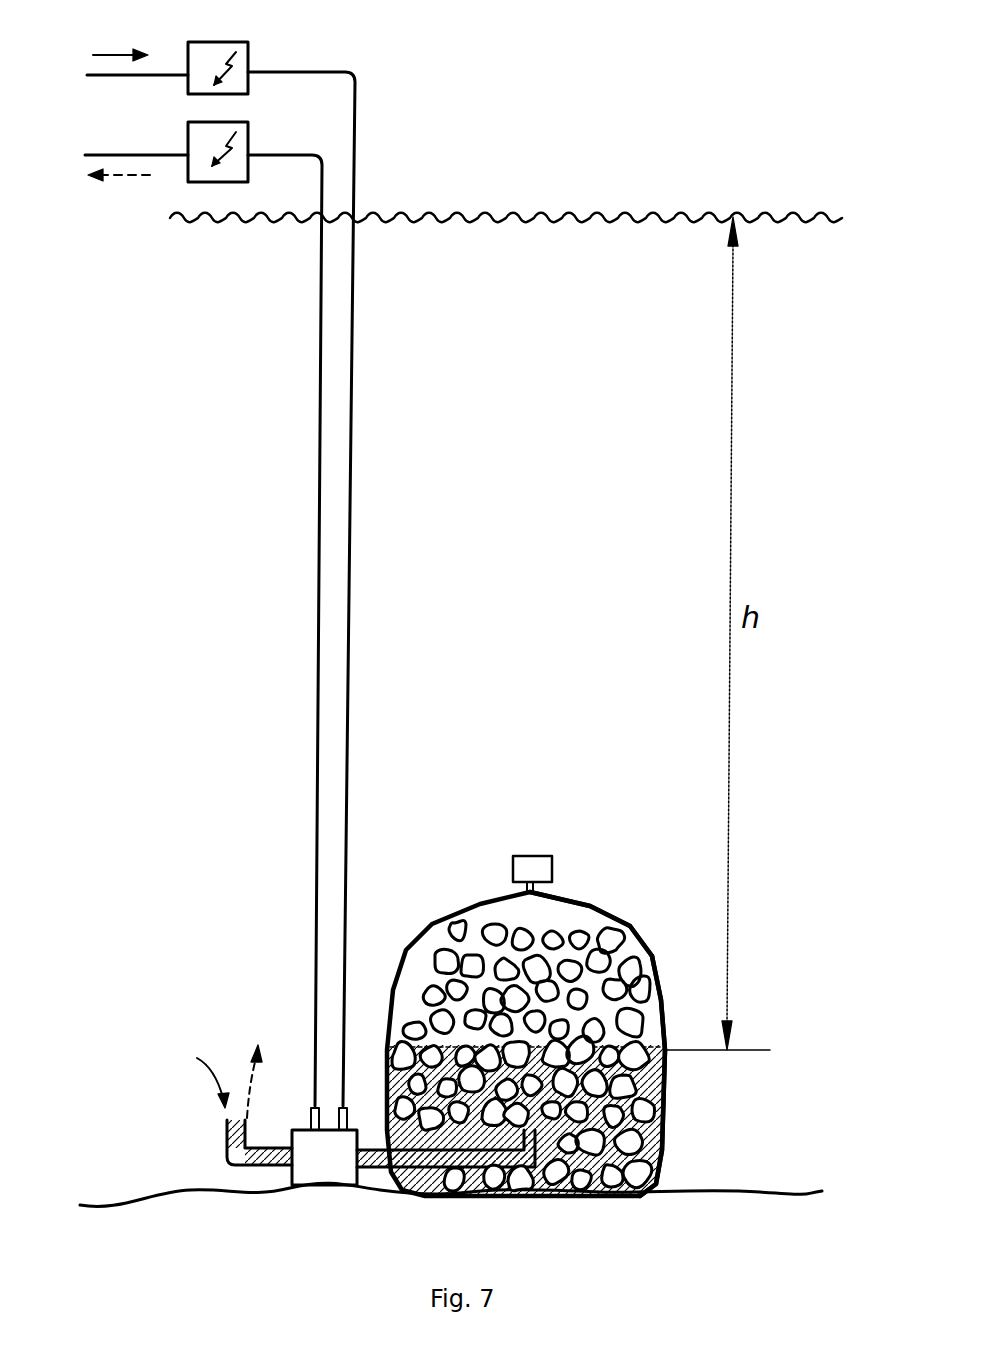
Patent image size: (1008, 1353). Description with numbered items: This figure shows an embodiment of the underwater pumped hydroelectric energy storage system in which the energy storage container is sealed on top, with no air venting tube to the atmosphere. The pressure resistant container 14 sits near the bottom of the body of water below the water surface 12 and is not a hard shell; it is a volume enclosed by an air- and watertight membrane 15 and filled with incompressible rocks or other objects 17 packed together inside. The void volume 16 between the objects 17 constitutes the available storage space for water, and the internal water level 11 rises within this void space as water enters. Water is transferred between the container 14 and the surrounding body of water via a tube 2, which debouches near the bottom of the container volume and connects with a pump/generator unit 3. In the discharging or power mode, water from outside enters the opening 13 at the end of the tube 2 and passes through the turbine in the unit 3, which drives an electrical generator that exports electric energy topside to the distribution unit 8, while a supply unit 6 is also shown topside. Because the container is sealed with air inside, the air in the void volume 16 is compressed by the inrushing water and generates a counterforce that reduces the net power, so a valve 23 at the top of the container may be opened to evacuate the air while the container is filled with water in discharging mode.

The tube 2 is at (457, 1197).
The pump/generator unit 3 is at (322, 1163).
The power supply unit 6 is at (205, 55).
The distribution unit 8 is at (235, 168).
The internal water level 11 is at (553, 980).
The water surface 12 is at (403, 210).
The opening 13 is at (207, 1088).
The pressure resistant container 14 is at (505, 958).
The membrane 15 is at (660, 1140).
The void volume 16 is at (645, 948).
The incompressible rocks or other objects 17 is at (613, 947).
The valve 23 is at (540, 868).